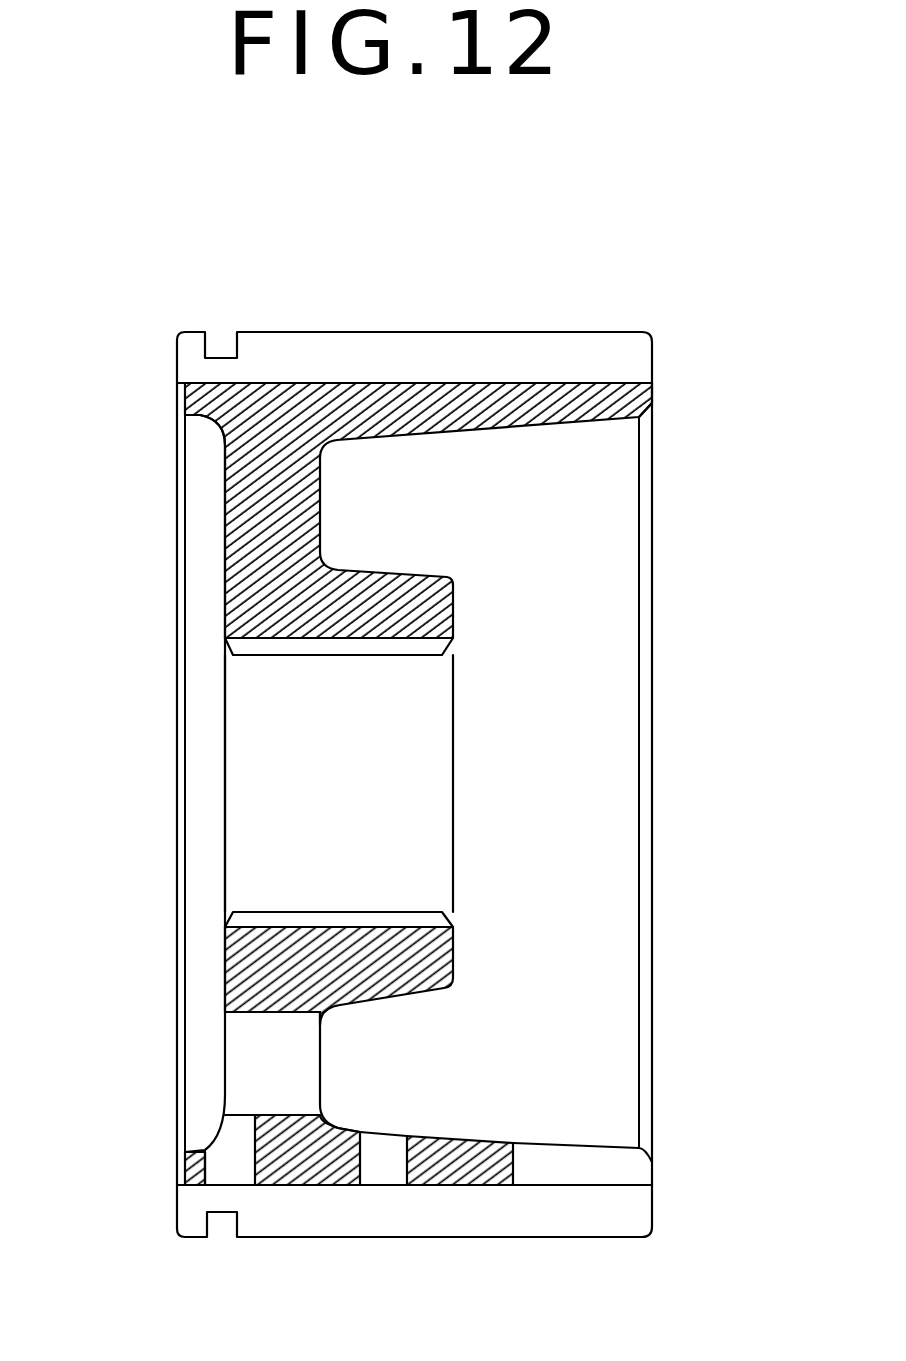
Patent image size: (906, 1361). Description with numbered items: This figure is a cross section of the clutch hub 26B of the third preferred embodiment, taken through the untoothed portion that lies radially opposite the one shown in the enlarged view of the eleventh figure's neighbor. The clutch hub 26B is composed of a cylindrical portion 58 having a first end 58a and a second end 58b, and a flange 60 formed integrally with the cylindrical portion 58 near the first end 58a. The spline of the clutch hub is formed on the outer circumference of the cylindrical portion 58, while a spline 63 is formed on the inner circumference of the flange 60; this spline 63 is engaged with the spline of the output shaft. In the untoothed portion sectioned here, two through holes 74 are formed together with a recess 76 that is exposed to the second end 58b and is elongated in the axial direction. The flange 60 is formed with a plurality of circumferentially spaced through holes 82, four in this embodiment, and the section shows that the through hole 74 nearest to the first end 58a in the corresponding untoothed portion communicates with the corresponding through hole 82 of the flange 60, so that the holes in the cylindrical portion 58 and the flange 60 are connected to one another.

The clutch hub 26B is at (496, 330).
The cylindrical portion 58 is at (383, 383).
The first end 58a is at (177, 400).
The second end 58b is at (655, 393).
The flange 60 is at (238, 500).
The spline 63 is at (370, 643).
The through holes 74 is at (222, 1163).
The recess 76 is at (541, 1175).
The through holes 82 is at (300, 1073).